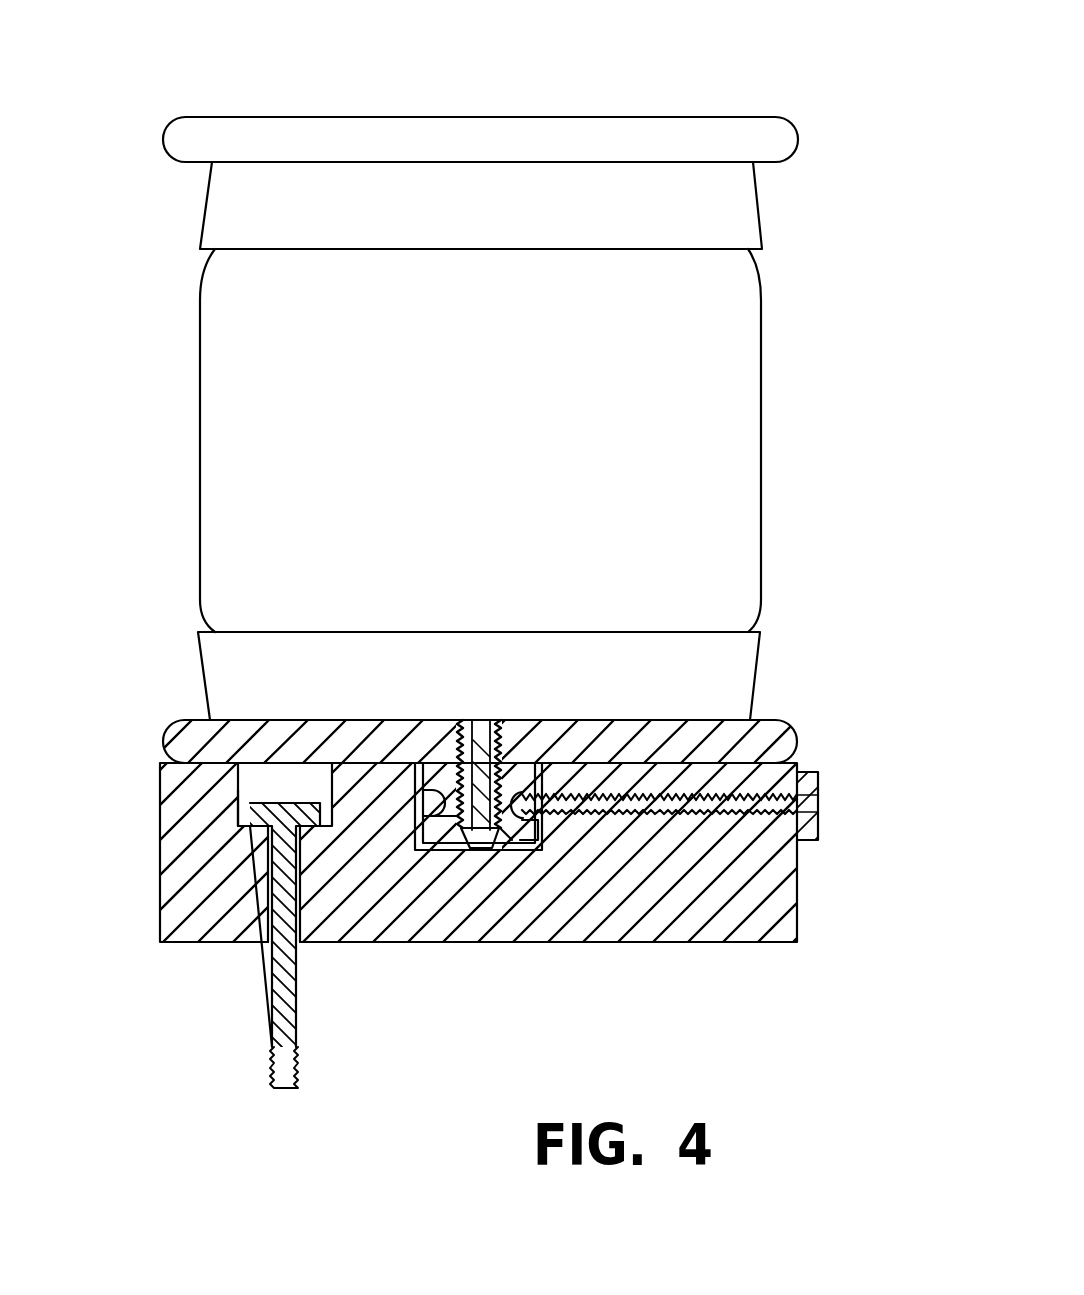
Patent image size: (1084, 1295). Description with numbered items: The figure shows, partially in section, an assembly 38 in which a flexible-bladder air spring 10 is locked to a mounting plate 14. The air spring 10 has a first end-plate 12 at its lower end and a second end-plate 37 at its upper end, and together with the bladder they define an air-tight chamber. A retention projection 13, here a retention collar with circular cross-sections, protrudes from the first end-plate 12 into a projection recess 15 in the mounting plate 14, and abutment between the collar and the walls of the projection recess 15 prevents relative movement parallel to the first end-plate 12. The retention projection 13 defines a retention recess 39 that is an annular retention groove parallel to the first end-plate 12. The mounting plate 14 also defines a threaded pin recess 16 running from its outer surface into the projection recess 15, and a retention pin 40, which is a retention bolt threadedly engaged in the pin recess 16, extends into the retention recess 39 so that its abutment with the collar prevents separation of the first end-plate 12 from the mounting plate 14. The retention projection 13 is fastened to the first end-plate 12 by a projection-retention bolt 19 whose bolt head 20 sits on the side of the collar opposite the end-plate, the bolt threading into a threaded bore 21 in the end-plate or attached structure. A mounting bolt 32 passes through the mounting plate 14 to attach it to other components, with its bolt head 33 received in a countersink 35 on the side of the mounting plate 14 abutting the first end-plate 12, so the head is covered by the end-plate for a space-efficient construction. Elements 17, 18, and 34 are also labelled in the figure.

The flexible-bladder air spring 10 is at (680, 347).
The first end-plate 12 is at (757, 725).
The retention projection 13 is at (420, 852).
The mounting plate 14 is at (775, 878).
The projection recess 15 is at (545, 850).
The pin recess 16 is at (595, 786).
The clip 17 is at (548, 842).
The screw tip 18 is at (493, 850).
The projection-retention bolt 19 is at (380, 720).
The bolt head 20 is at (467, 858).
The threaded bore 21 is at (483, 720).
The mounting bolt 32 is at (273, 992).
The bolt head 33 is at (283, 806).
The bolt shank 34 is at (290, 953).
The countersink 35 is at (238, 806).
The second end-plate 37 is at (580, 128).
The assembly 38 is at (800, 420).
The retention recess 39 is at (507, 850).
The retention pin 40 is at (560, 795).